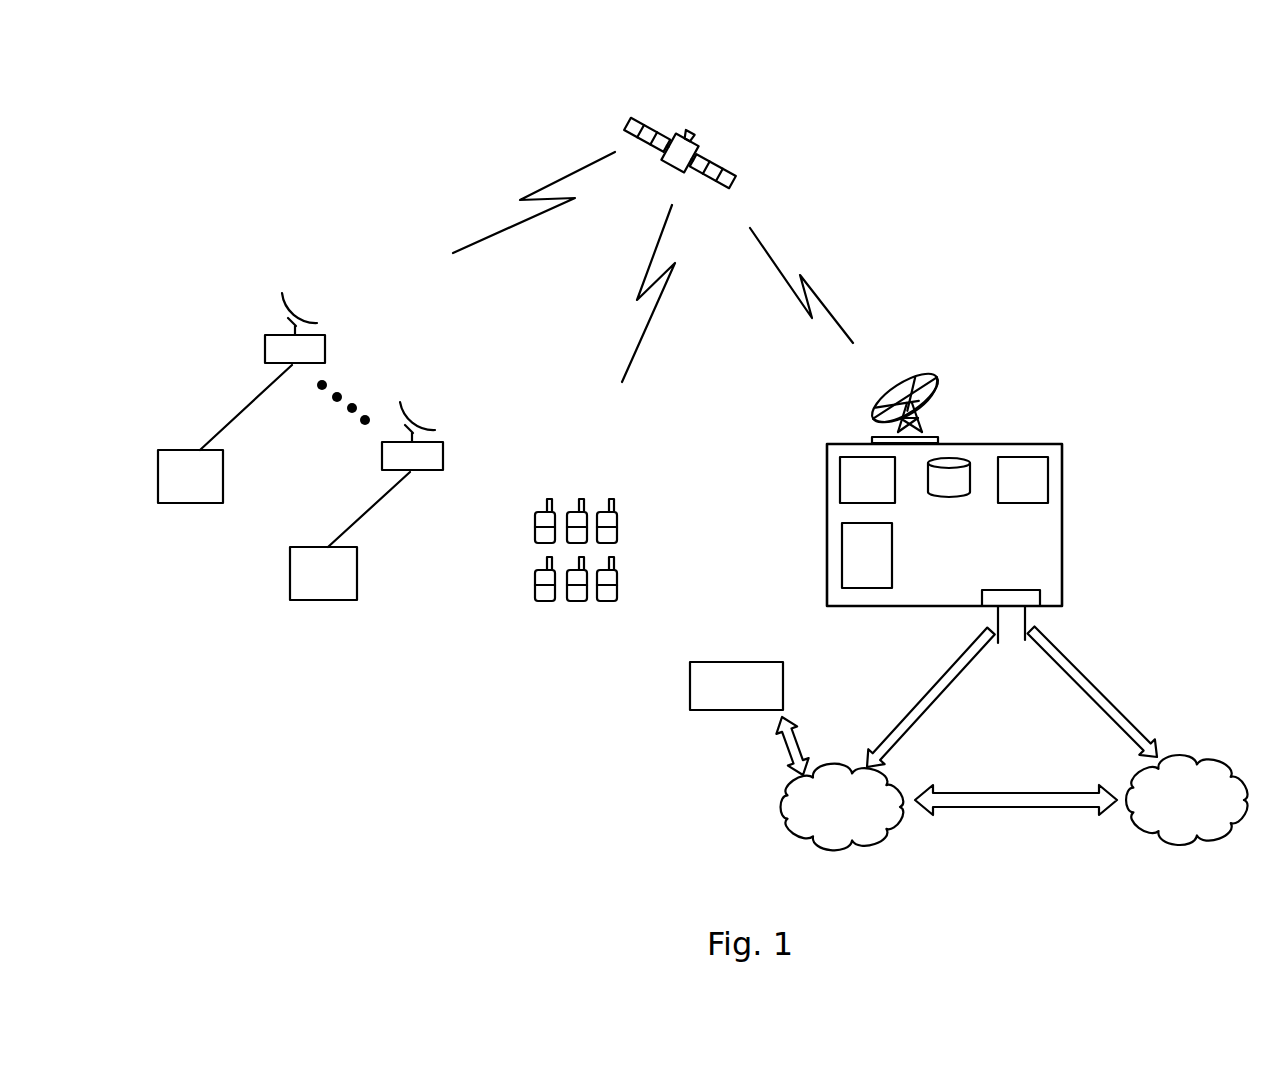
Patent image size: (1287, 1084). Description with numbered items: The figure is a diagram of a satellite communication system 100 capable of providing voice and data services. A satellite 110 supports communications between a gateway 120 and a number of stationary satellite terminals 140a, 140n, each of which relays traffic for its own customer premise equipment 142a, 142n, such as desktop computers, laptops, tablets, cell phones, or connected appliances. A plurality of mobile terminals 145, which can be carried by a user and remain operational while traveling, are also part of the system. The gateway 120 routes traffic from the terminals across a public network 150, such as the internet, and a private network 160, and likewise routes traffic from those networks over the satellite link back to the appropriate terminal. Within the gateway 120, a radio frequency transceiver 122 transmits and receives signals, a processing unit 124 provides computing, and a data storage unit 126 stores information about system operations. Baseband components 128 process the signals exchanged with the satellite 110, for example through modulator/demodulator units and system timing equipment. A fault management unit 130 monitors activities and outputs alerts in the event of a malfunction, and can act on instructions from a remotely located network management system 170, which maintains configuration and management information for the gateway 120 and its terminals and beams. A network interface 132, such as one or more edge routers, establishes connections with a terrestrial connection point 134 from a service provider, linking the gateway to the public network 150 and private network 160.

The satellite communication system 100 is at (1090, 93).
The satellite 110 is at (717, 163).
The gateway 120 is at (974, 454).
The radio frequency transceiver 122 is at (940, 382).
The processing unit 124 is at (840, 478).
The data storage unit 126 is at (950, 497).
The baseband components 128 is at (842, 557).
The fault management unit 130 is at (1060, 473).
The network interface 132 is at (1008, 590).
The terrestrial connection point 134 is at (1012, 645).
The stationary satellite terminal 140a is at (265, 348).
The stationary satellite terminal 140n is at (382, 457).
The customer premise equipment 142a is at (190, 505).
The customer premise equipment 142n is at (323, 602).
The mobile terminals 145 is at (511, 614).
The public network 150 is at (1186, 812).
The private network 160 is at (842, 820).
The network management system 170 is at (690, 690).